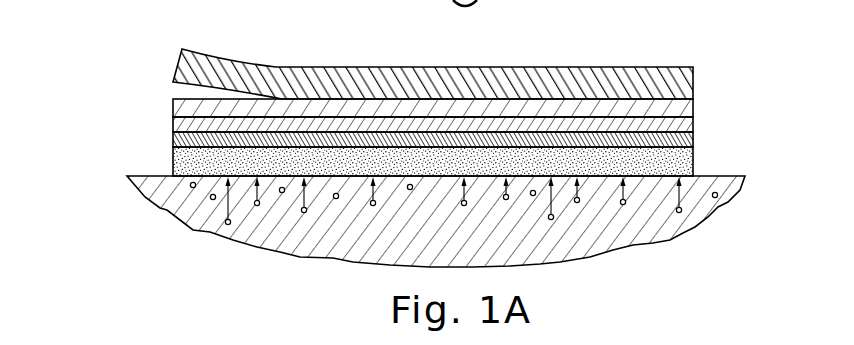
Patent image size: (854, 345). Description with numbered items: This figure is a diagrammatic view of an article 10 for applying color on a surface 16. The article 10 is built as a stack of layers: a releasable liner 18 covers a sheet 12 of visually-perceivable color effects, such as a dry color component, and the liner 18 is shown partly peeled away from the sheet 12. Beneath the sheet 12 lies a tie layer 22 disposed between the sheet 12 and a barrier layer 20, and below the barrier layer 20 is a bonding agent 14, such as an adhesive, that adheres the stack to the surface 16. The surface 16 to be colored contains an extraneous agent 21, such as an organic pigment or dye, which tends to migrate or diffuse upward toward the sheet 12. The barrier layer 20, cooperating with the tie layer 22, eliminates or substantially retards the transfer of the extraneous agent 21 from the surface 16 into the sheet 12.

The article 10 is at (160, 40).
The releasable liner 18 is at (693, 83).
The sheet 12 is at (693, 105).
The tie layer 22 is at (693, 122).
The barrier layer 20 is at (693, 138).
The bonding agent 14 is at (693, 163).
The surface 16 is at (675, 223).
The extraneous agent 21 is at (302, 214).